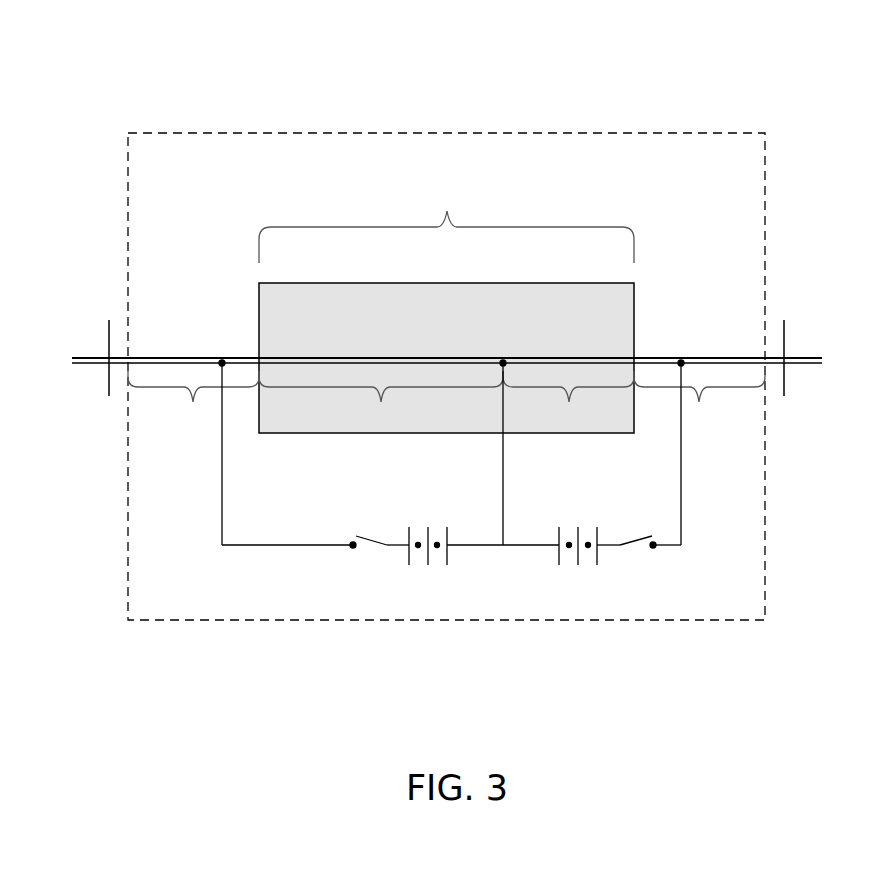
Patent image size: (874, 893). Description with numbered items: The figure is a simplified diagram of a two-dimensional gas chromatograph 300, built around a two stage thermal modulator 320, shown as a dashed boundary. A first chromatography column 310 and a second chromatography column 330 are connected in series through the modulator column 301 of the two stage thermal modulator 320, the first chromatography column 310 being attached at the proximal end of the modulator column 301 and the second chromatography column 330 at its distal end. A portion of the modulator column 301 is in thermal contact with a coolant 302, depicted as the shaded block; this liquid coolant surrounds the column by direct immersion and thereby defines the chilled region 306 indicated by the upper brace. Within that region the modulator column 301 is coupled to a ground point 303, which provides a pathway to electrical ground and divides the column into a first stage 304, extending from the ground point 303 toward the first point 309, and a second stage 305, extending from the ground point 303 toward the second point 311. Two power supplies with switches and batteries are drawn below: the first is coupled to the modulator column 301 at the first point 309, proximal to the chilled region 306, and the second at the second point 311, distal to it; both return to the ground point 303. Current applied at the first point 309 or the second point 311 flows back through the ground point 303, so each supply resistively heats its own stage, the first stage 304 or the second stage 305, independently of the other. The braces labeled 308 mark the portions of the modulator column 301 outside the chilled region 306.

The 2D GC 300 is at (658, 22).
The modulator column 301 is at (242, 340).
The coolant 302 is at (446, 358).
The ground point 303 is at (514, 345).
The first stage 304 is at (381, 399).
The second stage 305 is at (568, 399).
The chilled region 306 is at (446, 219).
The passive section 308 is at (446, 399).
The first point 309 is at (222, 340).
The first chromatography column 310 is at (90, 340).
The second point 311 is at (693, 348).
The two stage thermal modulator 320 is at (732, 118).
The second chromatography column 330 is at (804, 340).